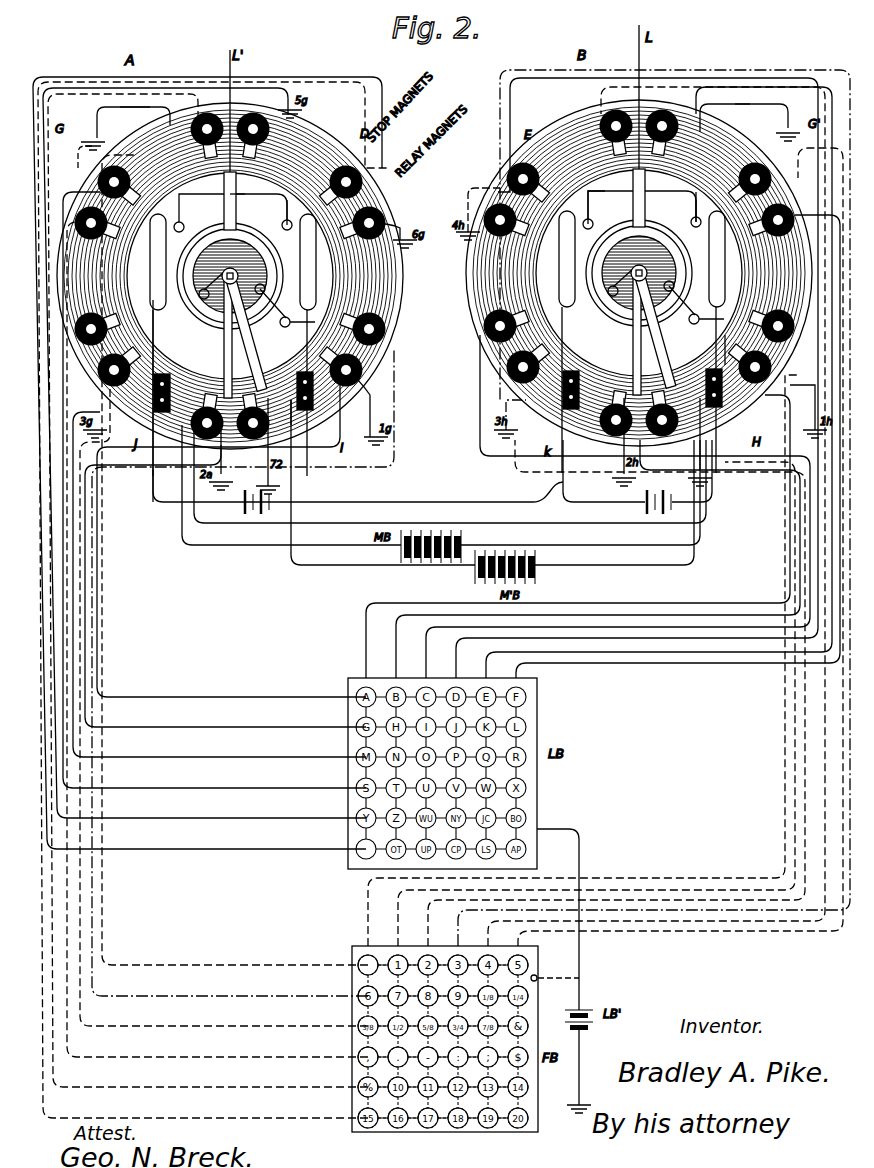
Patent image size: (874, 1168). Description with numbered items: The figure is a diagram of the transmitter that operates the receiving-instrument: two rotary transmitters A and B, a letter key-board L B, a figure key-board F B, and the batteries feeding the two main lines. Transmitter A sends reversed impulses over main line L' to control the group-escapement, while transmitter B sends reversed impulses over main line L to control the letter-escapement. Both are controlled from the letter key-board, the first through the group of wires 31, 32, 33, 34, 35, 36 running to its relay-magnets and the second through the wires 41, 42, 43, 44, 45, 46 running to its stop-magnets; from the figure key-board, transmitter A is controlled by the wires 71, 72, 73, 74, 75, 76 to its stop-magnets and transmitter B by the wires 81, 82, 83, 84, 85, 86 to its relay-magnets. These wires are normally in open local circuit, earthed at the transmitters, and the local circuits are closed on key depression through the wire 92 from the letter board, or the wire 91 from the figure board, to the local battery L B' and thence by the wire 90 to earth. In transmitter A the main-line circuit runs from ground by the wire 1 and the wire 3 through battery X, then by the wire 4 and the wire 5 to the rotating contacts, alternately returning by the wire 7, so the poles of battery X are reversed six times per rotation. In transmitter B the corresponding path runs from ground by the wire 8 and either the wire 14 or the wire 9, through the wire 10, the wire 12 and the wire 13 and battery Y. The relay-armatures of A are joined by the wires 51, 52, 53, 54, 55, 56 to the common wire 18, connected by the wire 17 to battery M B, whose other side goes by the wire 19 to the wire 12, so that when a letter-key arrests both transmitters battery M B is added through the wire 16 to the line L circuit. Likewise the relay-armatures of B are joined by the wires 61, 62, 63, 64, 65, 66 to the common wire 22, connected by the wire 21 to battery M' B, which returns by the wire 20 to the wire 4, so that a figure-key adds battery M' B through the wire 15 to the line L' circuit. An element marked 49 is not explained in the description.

The wire 1 is at (135, 113).
The wire 3 is at (145, 486).
The wire 4 is at (251, 504).
The wire 5 is at (295, 431).
The wire 7 is at (252, 188).
The wire 8 is at (743, 97).
The wire 9 is at (701, 207).
The wire 10 is at (724, 350).
The wire 12 is at (670, 479).
The wire 13 is at (604, 478).
The wire 14 is at (604, 202).
The wire 15 is at (358, 401).
The wire 16 is at (450, 474).
The wire 17 is at (291, 485).
The common wire 18 is at (249, 273).
The wire 19 is at (580, 492).
The wire 20 is at (383, 491).
The wire 21 is at (614, 510).
The common wire 22 is at (680, 288).
The wire 31 is at (233, 526).
The wire 32 is at (225, 576).
The wire 33 is at (219, 582).
The wire 34 is at (214, 488).
The wire 35 is at (204, 453).
The wire 36 is at (219, 463).
The wire 41 is at (572, 536).
The wire 42 is at (592, 559).
The wire 43 is at (612, 506).
The wire 44 is at (631, 378).
The wire 45 is at (658, 382).
The wire 46 is at (675, 432).
The conductor 49 is at (80, 157).
The wire 51 is at (346, 364).
The wire 52 is at (207, 400).
The wire 53 is at (119, 341).
The wire 54 is at (127, 182).
The wire 55 is at (257, 146).
The wire 56 is at (362, 231).
The wire 61 is at (775, 318).
The wire 62 is at (662, 406).
The wire 63 is at (512, 329).
The wire 64 is at (513, 220).
The wire 65 is at (601, 138).
The wire 66 is at (768, 220).
The wire 71 is at (235, 560).
The wire 72 is at (252, 673).
The wire 73 is at (224, 705).
The wire 74 is at (212, 638).
The wire 75 is at (208, 590).
The wire 76 is at (226, 600).
The wire 81 is at (587, 655).
The wire 82 is at (590, 703).
The wire 83 is at (610, 693).
The wire 84 is at (648, 508).
The wire 85 is at (650, 515).
The wire 86 is at (677, 546).
The wire 90 is at (581, 1057).
The wire 91 is at (555, 983).
The wire 92 is at (567, 919).